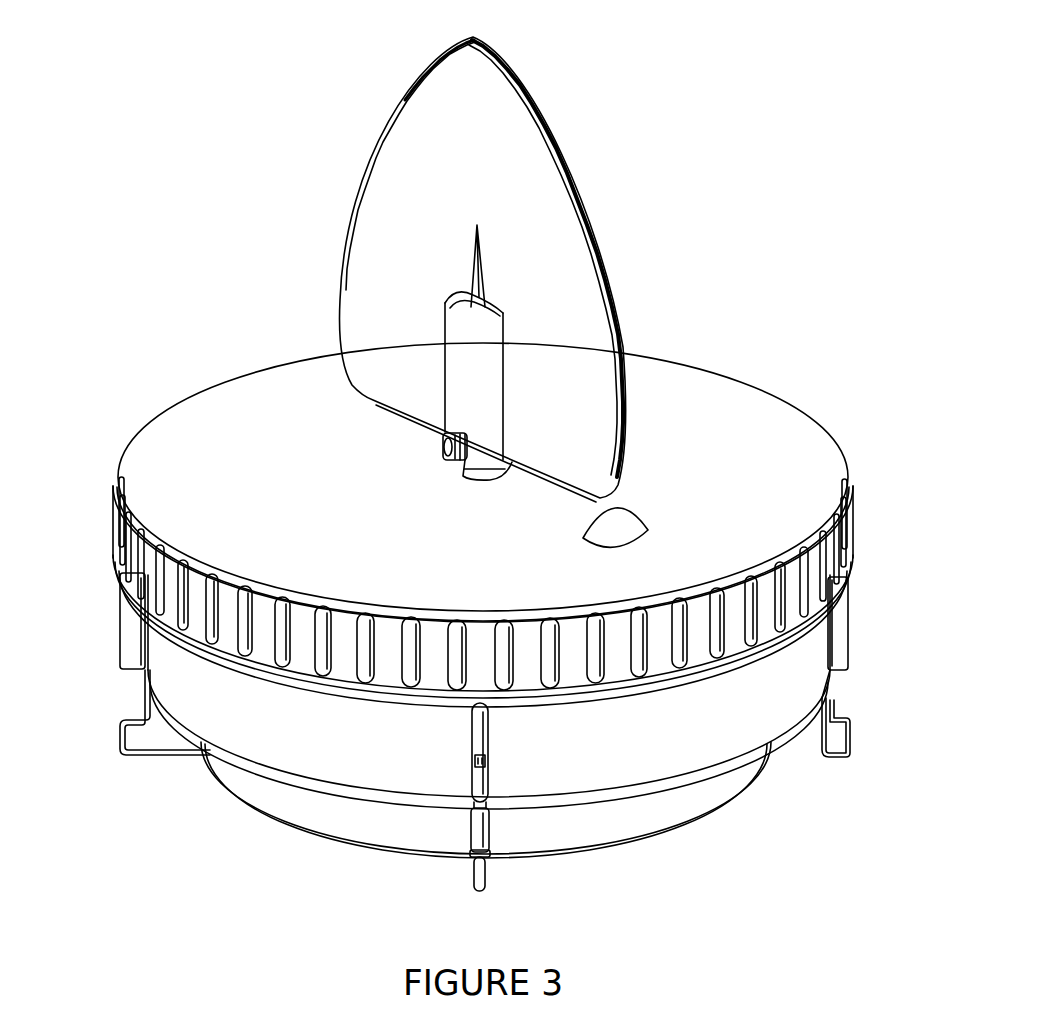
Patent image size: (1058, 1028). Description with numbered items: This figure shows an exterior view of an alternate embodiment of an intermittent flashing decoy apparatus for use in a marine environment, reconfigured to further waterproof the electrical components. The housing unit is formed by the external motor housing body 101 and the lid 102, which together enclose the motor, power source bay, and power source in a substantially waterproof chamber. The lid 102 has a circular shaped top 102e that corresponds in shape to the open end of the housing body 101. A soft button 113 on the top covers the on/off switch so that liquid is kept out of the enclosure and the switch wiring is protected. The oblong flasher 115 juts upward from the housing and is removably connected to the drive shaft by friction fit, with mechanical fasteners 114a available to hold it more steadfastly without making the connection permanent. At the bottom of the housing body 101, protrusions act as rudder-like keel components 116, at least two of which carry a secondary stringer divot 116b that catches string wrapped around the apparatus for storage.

The motor housing body 101 is at (243, 727).
The lid 102 is at (828, 562).
The circular shaped top 102e is at (667, 423).
The soft button 113 is at (615, 527).
The mechanical fasteners 114a is at (445, 439).
The flasher 115 is at (412, 227).
The keel components 116 is at (120, 615).
The secondary stringer divot 116b is at (853, 737).